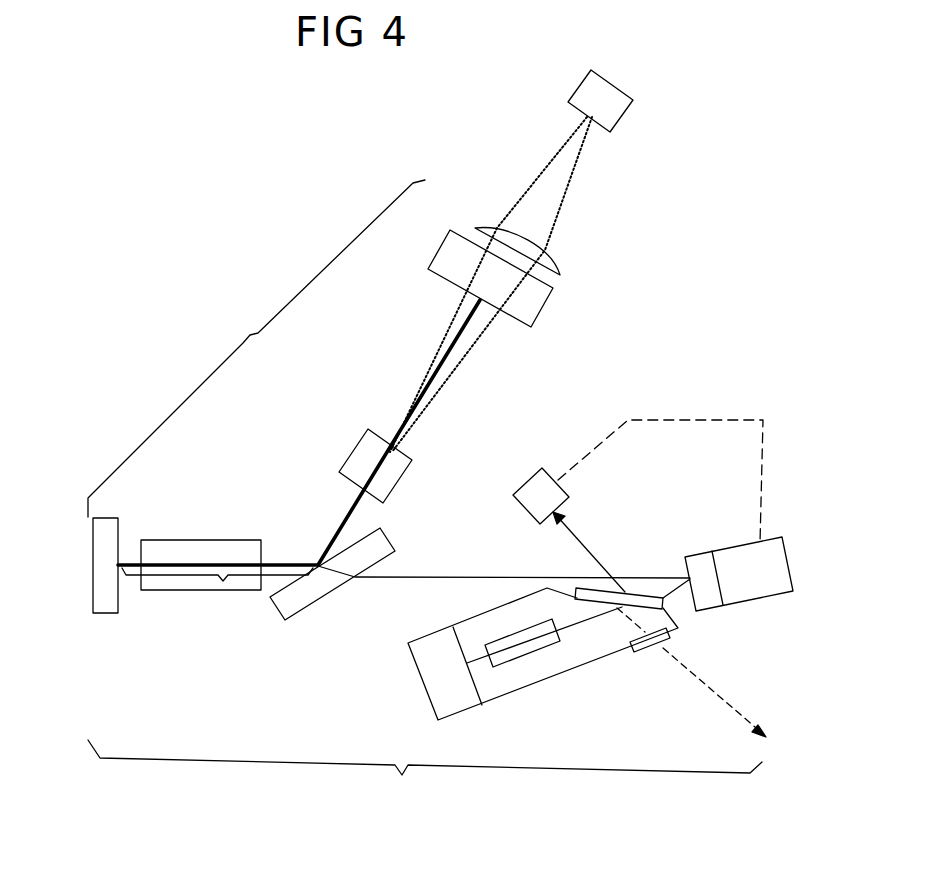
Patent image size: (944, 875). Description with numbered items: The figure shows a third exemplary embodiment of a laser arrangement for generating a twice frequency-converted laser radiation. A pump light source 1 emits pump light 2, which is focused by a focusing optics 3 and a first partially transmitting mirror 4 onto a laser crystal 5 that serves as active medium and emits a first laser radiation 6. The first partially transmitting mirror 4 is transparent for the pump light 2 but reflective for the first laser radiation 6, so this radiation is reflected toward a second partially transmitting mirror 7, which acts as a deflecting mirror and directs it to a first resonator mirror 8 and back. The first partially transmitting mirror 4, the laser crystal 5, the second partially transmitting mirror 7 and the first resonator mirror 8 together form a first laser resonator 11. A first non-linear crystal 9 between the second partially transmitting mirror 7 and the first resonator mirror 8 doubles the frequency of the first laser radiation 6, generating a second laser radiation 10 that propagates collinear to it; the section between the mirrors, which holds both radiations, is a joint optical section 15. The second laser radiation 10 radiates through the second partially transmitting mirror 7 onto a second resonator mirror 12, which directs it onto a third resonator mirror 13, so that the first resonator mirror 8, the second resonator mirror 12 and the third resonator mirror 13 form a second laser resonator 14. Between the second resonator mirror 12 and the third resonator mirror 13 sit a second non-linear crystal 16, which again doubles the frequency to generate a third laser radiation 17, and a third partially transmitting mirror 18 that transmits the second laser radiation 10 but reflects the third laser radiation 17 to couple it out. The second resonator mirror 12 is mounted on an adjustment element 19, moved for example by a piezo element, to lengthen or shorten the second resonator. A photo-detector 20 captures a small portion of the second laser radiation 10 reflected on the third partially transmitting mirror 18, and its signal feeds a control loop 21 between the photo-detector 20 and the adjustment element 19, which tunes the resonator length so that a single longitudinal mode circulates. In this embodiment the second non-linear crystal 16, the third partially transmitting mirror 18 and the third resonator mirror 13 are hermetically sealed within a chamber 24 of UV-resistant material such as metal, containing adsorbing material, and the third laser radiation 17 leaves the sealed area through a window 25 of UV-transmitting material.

The pump light source 1 is at (608, 107).
The pump light 2 is at (567, 183).
The focusing optics 3 is at (555, 262).
The first partially transmitting mirror 4 is at (452, 243).
The laser crystal 5 is at (370, 455).
The first laser radiation 6 is at (430, 368).
The second partially transmitting mirror 7 is at (288, 602).
The first resonator mirror 8 is at (100, 608).
The first non-linear crystal 9 is at (187, 585).
The second laser radiation 10 is at (285, 563).
The first laser resonator 11 is at (256, 348).
The second resonator mirror 12 is at (702, 567).
The third resonator mirror 13 is at (428, 680).
The second laser resonator 14 is at (425, 776).
The joint optical section 15 is at (217, 600).
The second non-linear crystal 16 is at (513, 665).
The third laser radiation 17 is at (670, 657).
The third partially transmitting mirror 18 is at (665, 610).
The adjustment element 19 is at (767, 567).
The photo-detector 20 is at (550, 467).
The control loop 21 is at (707, 418).
The chamber 24 is at (570, 672).
The window 25 is at (668, 640).